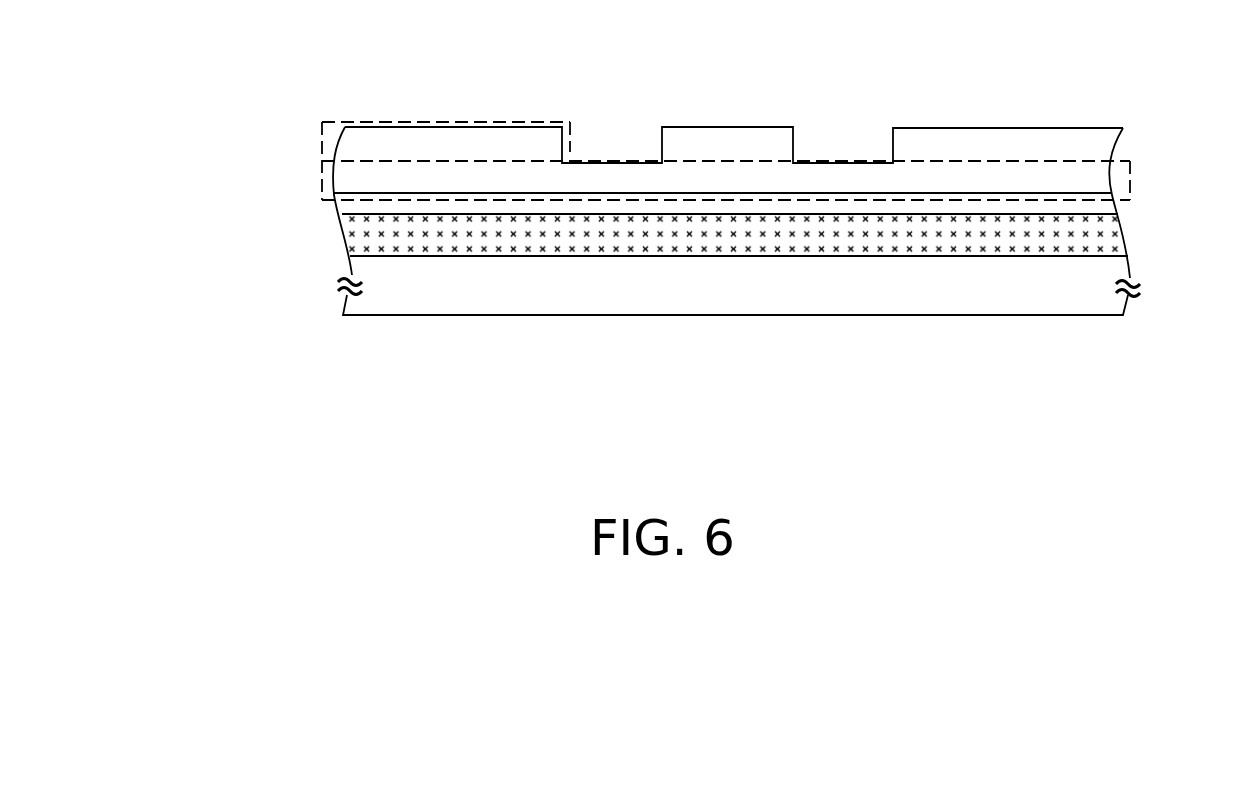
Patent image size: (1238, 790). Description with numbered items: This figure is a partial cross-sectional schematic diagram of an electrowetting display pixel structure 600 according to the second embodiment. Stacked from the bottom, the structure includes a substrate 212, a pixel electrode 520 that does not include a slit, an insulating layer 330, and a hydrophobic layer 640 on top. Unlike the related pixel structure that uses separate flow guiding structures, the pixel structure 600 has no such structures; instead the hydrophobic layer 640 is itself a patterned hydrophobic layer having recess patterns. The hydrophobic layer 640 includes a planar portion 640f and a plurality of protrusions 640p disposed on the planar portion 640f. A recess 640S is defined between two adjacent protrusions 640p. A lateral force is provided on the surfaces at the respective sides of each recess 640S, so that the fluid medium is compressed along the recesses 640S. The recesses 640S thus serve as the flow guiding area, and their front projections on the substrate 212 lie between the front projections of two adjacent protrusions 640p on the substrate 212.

The electrowetting display pixel structure 600 is at (1170, 432).
The hydrophobic layer 640 is at (214, 103).
The protrusions 640p is at (322, 132).
The planar portion 640f is at (322, 168).
The recess 640S is at (611, 111).
The insulating layer 330 is at (343, 207).
The pixel electrode 520 is at (345, 237).
The substrate 212 is at (348, 267).